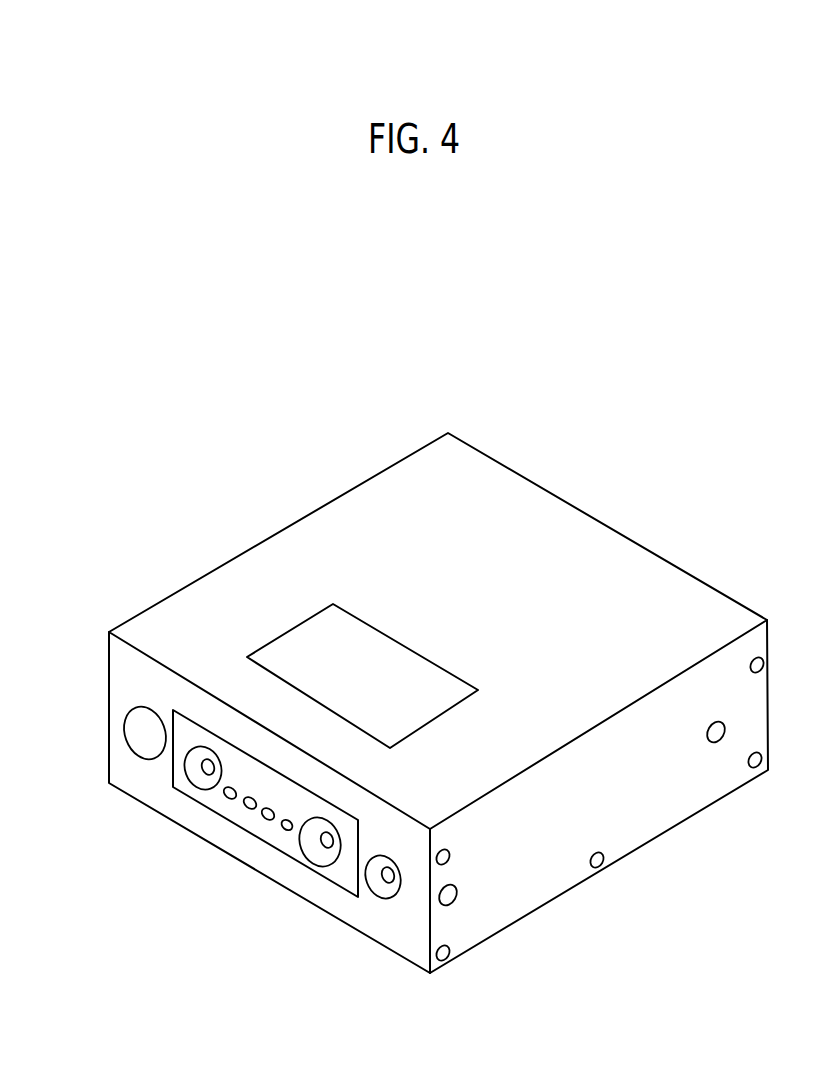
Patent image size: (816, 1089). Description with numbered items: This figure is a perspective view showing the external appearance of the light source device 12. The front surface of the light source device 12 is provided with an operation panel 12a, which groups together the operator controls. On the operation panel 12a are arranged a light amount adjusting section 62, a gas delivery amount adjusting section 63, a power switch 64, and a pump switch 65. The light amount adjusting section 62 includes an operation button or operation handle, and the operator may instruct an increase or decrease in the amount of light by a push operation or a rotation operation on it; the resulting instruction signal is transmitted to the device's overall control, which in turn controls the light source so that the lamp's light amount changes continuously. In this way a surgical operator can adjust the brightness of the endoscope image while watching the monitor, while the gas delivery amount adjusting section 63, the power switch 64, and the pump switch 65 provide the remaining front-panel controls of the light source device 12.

The light source device 12 is at (367, 483).
The operation panel 12a is at (348, 895).
The light amount adjusting section 62 is at (322, 847).
The gas delivery amount adjusting section 63 is at (206, 766).
The power switch 64 is at (287, 830).
The pump switch 65 is at (261, 813).